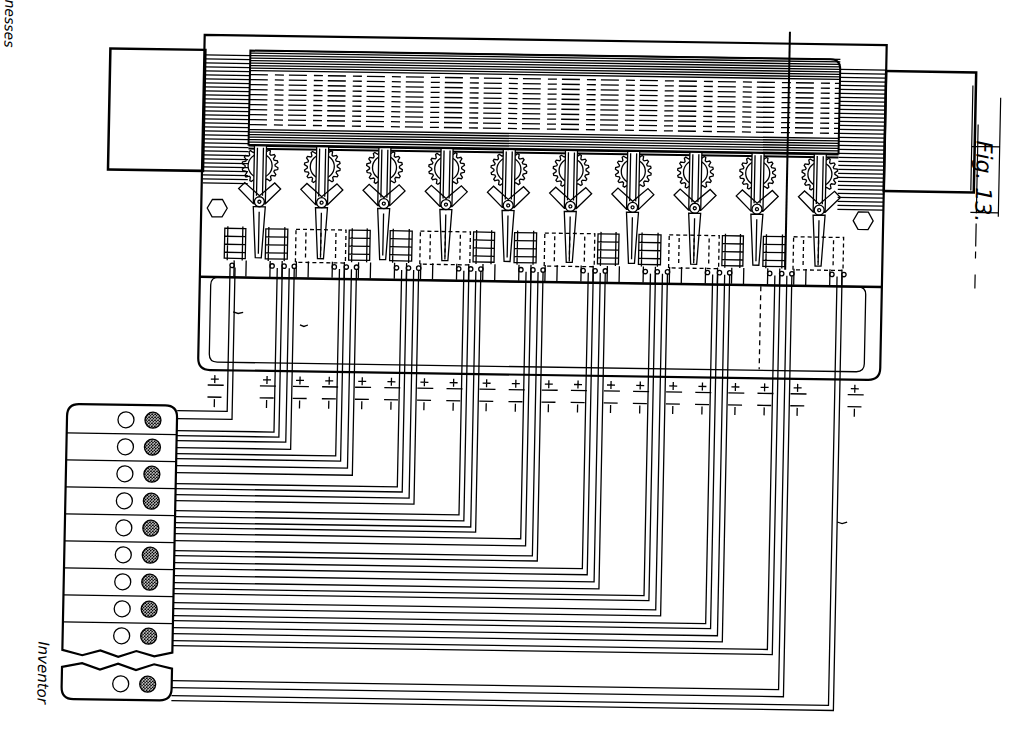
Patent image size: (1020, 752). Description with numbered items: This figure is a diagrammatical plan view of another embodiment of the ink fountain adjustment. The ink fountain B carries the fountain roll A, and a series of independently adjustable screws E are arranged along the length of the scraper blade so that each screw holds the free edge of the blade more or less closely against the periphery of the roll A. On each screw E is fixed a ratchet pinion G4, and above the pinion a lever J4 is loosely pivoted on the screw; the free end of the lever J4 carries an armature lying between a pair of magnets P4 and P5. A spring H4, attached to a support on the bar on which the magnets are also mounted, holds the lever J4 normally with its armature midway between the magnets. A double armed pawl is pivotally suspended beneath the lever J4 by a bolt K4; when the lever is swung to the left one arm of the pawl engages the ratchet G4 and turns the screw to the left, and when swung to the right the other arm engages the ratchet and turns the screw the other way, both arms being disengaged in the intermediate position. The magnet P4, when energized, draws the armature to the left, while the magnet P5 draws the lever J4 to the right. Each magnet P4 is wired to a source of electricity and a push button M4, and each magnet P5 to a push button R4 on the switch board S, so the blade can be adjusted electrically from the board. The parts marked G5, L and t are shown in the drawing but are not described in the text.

The fountain roll A is at (544, 130).
The ink fountain B is at (196, 332).
The screw E is at (568, 152).
The ratchet pinion G4 is at (676, 151).
The toothed wheel G5 is at (682, 208).
The spring H4 is at (325, 209).
The lever J4 is at (449, 206).
The bolt K4 is at (265, 212).
The magnet P4 is at (525, 237).
The magnet P5 is at (597, 224).
The conductor L is at (248, 317).
The wire t is at (582, 428).
The switch board S is at (51, 447).
The push button R4 is at (120, 450).
The push button M4 is at (150, 447).